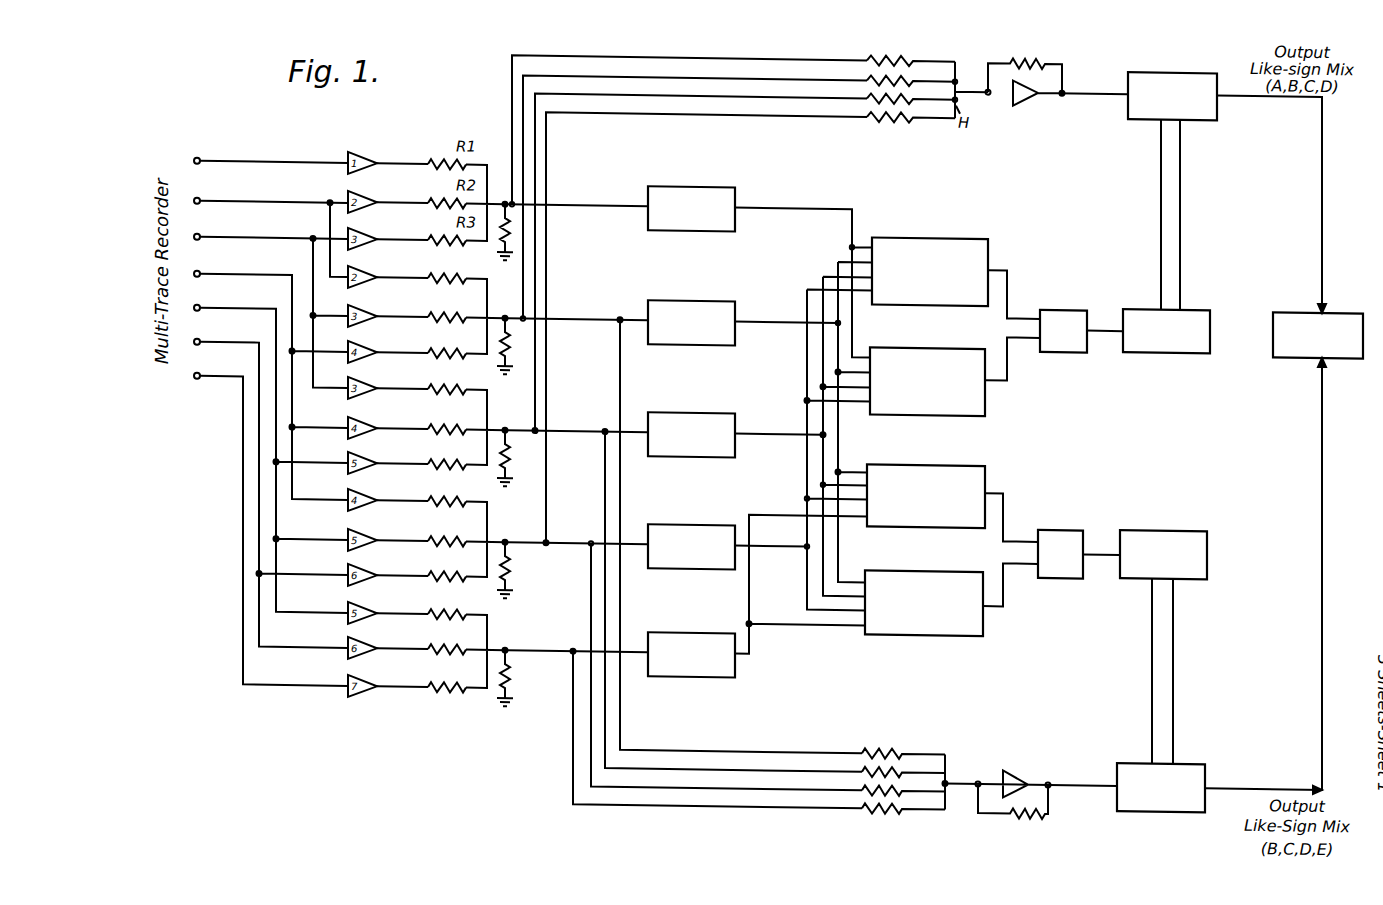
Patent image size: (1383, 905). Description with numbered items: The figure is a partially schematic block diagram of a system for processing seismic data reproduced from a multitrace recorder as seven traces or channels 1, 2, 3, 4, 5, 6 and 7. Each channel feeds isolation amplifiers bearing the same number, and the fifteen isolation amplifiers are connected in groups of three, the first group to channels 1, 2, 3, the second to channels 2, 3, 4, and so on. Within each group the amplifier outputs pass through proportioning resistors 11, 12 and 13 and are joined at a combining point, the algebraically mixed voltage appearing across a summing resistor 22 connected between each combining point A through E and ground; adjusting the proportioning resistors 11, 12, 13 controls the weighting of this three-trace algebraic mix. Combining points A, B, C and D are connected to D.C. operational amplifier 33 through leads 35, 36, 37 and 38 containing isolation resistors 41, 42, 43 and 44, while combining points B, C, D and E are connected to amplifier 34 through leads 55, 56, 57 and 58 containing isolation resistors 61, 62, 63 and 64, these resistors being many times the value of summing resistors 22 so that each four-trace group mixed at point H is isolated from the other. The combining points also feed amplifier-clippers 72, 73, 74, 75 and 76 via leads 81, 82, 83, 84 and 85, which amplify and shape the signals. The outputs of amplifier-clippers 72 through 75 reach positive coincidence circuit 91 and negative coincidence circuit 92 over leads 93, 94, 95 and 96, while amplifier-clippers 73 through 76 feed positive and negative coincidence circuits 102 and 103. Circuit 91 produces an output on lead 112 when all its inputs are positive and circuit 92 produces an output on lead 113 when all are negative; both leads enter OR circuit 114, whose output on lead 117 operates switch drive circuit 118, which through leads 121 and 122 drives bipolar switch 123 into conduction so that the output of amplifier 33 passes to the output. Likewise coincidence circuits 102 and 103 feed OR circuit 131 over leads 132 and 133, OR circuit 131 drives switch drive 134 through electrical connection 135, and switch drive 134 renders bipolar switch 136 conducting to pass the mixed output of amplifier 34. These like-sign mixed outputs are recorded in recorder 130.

The channel 1 is at (264, 162).
The channel 2 is at (264, 234).
The channel 3 is at (264, 307).
The channel 4 is at (264, 382).
The channel 5 is at (264, 455).
The channel 6 is at (264, 490).
The channel 7 is at (264, 526).
The proportioning resistor 11 is at (436, 163).
The proportioning resistor 12 is at (436, 202).
The proportioning resistor 13 is at (436, 239).
The summing resistor 22 is at (496, 253).
The D.C. operational amplifier 33 is at (1030, 104).
The D.C. operational amplifier 34 is at (1024, 766).
The lead 35 is at (606, 58).
The lead 36 is at (630, 78).
The lead 37 is at (658, 96).
The lead 38 is at (684, 114).
The isolation resistor 41 is at (866, 55).
The isolation resistor 42 is at (905, 76).
The isolation resistor 43 is at (905, 100).
The isolation resistor 44 is at (866, 121).
The lead 55 is at (712, 748).
The lead 56 is at (727, 769).
The lead 57 is at (751, 787).
The lead 58 is at (769, 805).
The isolation resistor 61 is at (873, 748).
The isolation resistor 62 is at (900, 767).
The isolation resistor 63 is at (902, 792).
The isolation resistor 64 is at (866, 812).
The amplifier-clipper 72 is at (713, 187).
The amplifier-clipper 73 is at (713, 301).
The amplifier-clipper 74 is at (713, 413).
The amplifier-clipper 75 is at (710, 525).
The amplifier-clipper 76 is at (708, 633).
The lead 81 is at (583, 206).
The lead 82 is at (580, 320).
The lead 83 is at (580, 432).
The lead 84 is at (572, 544).
The lead 85 is at (543, 652).
The positive coincidence circuit 91 is at (927, 235).
The negative coincidence circuit 92 is at (927, 345).
The lead 93 is at (780, 207).
The lead 94 is at (769, 320).
The lead 95 is at (772, 432).
The lead 96 is at (764, 543).
The positive coincidence circuit 102 is at (924, 462).
The negative coincidence circuit 103 is at (924, 568).
The lead 112 is at (1009, 278).
The lead 113 is at (1008, 380).
The OR circuit 114 is at (1062, 305).
The lead 117 is at (1104, 318).
The switch drive circuit 118 is at (1190, 303).
The lead 121 is at (1180, 188).
The lead 122 is at (1161, 188).
The bipolar switch 123 is at (1185, 60).
The recorder 130 is at (1290, 304).
The OR circuit 131 is at (1056, 525).
The lead 132 is at (1008, 501).
The lead 133 is at (1003, 604).
The switch drive 134 is at (1165, 524).
The electrical connection 135 is at (1098, 545).
The bipolar switch 136 is at (1185, 757).